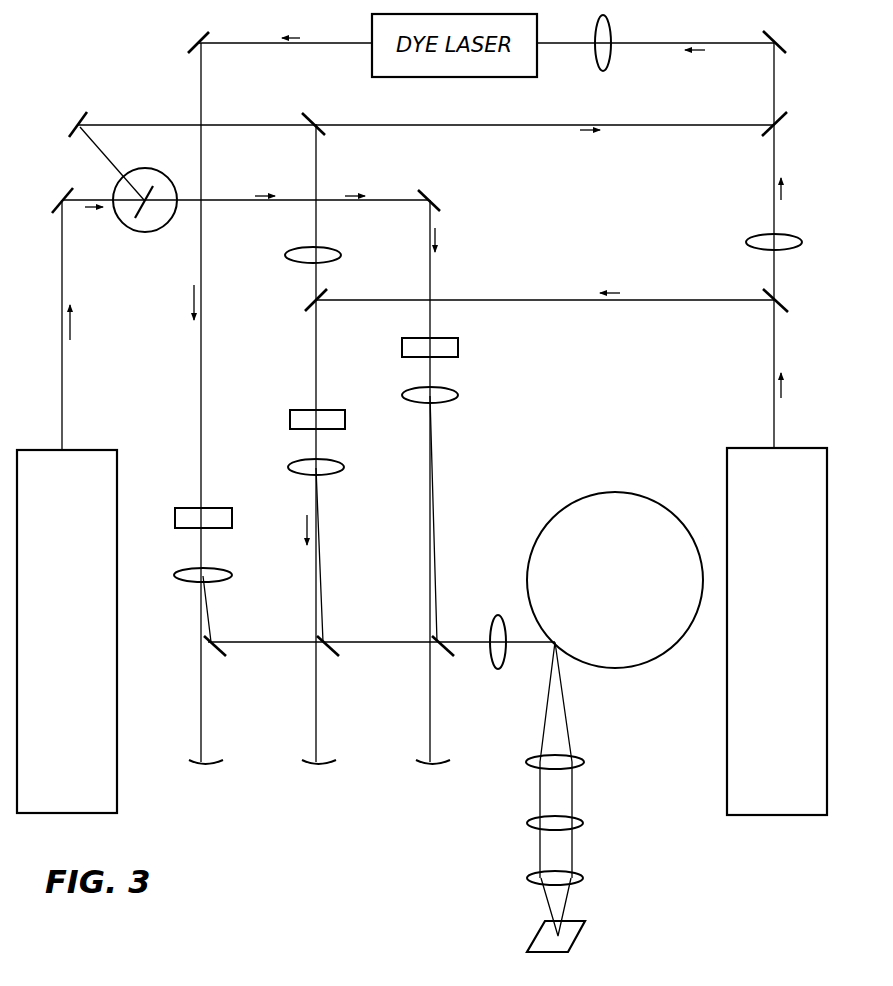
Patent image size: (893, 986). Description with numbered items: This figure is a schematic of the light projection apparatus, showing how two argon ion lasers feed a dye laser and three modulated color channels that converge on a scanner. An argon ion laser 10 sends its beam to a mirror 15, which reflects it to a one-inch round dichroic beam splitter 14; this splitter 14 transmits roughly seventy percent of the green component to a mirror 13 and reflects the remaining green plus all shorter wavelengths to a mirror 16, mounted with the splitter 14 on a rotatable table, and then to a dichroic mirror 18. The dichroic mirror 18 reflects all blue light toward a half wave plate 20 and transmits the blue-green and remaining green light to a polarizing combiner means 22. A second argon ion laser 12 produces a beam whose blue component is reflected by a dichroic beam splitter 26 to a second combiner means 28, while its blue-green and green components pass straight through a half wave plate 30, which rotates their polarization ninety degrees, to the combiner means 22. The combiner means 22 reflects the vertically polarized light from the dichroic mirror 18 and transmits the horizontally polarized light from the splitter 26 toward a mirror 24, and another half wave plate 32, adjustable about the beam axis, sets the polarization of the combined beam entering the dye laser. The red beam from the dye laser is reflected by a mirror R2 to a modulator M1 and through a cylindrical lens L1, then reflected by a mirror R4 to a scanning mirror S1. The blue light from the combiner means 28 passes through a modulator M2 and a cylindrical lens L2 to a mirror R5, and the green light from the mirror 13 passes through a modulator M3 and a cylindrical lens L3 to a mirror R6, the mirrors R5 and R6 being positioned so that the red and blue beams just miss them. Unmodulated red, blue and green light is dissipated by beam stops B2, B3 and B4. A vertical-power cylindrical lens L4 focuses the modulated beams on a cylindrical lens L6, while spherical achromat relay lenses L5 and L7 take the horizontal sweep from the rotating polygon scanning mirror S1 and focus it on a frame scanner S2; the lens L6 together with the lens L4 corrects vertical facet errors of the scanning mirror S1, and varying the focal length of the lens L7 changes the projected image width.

The argon ion laser 10 is at (117, 670).
The argon ion laser 12 is at (727, 750).
The mirror 13 is at (440, 203).
The dichroic beam splitter 14 is at (143, 212).
The mirror 15 is at (63, 195).
The mirror 16 is at (78, 118).
The dichroic mirror 18 is at (313, 120).
The half wave plate 20 is at (338, 250).
The combiner means 22 is at (783, 113).
The mirror 24 is at (786, 42).
The dichroic beam splitter 26 is at (785, 302).
The combiner means 28 is at (305, 300).
The half wave plate 30 is at (798, 236).
The half wave plate 32 is at (610, 28).
The mirror R2 is at (196, 40).
The mirror R4 is at (220, 655).
The mirror R5 is at (330, 656).
The mirror R6 is at (445, 656).
The modulator M1 is at (226, 508).
The modulator M2 is at (345, 420).
The modulator M3 is at (458, 348).
The cylindrical lens L1 is at (230, 572).
The cylindrical lens L2 is at (340, 470).
The cylindrical lens L3 is at (456, 396).
The cylindrical lens L4 is at (498, 615).
The spherical achromat L5 is at (584, 762).
The cylindrical lens L6 is at (583, 823).
The spherical achromat L7 is at (583, 878).
The beam stop B2 is at (216, 764).
The beam stop B3 is at (328, 764).
The beam stop B4 is at (446, 764).
The scanning mirror S1 is at (645, 657).
The frame scanner S2 is at (578, 938).